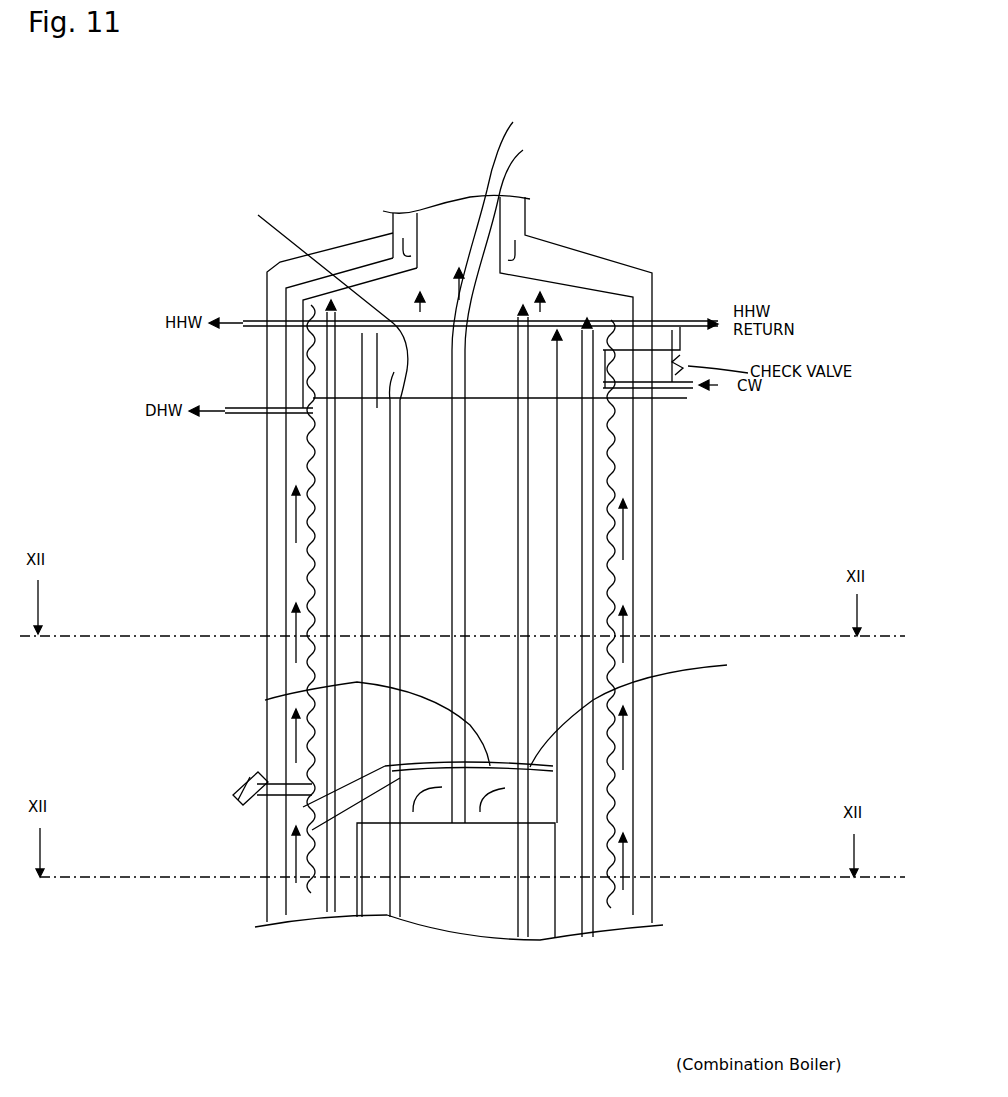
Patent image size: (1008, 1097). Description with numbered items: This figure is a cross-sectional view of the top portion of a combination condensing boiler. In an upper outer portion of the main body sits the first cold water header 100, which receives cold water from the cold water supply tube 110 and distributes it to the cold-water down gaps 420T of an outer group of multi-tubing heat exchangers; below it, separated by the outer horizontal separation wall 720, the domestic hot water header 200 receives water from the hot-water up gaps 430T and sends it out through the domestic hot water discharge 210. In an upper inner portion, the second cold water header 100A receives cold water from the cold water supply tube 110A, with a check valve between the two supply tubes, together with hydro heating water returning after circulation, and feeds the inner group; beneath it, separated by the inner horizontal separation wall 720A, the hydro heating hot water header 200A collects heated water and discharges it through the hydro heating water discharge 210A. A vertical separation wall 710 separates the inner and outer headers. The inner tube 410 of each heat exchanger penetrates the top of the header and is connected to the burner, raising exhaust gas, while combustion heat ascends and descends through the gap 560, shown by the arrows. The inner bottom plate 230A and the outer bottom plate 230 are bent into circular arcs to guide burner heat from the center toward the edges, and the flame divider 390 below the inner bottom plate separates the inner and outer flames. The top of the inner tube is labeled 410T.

The first cold water header 100 is at (582, 300).
The second cold water header 100A is at (553, 303).
The cold water supply tube 110 is at (673, 393).
The cold water supply tube (HHW return) 110A is at (663, 322).
The domestic hot water header 200 is at (572, 455).
The hydro heating hot water header 200A is at (502, 477).
The domestic hot water discharge 210 is at (240, 416).
The hydro heating water discharge 210A is at (258, 317).
The outer bottom plate 230 is at (348, 784).
The inner bottom plate 230A is at (265, 700).
The flame divider 390 is at (504, 856).
The inner tube 410 is at (508, 482).
The central flue pipe top 410T is at (505, 463).
The cold-water down gap 420T is at (310, 558).
The hot-water up gap 430T is at (655, 710).
The combustion heat ascending and descending gap 560 is at (299, 676).
The vertical separation wall 710 is at (360, 578).
The outer horizontal separation wall 720 is at (687, 349).
The inner horizontal separation wall 720A is at (432, 398).